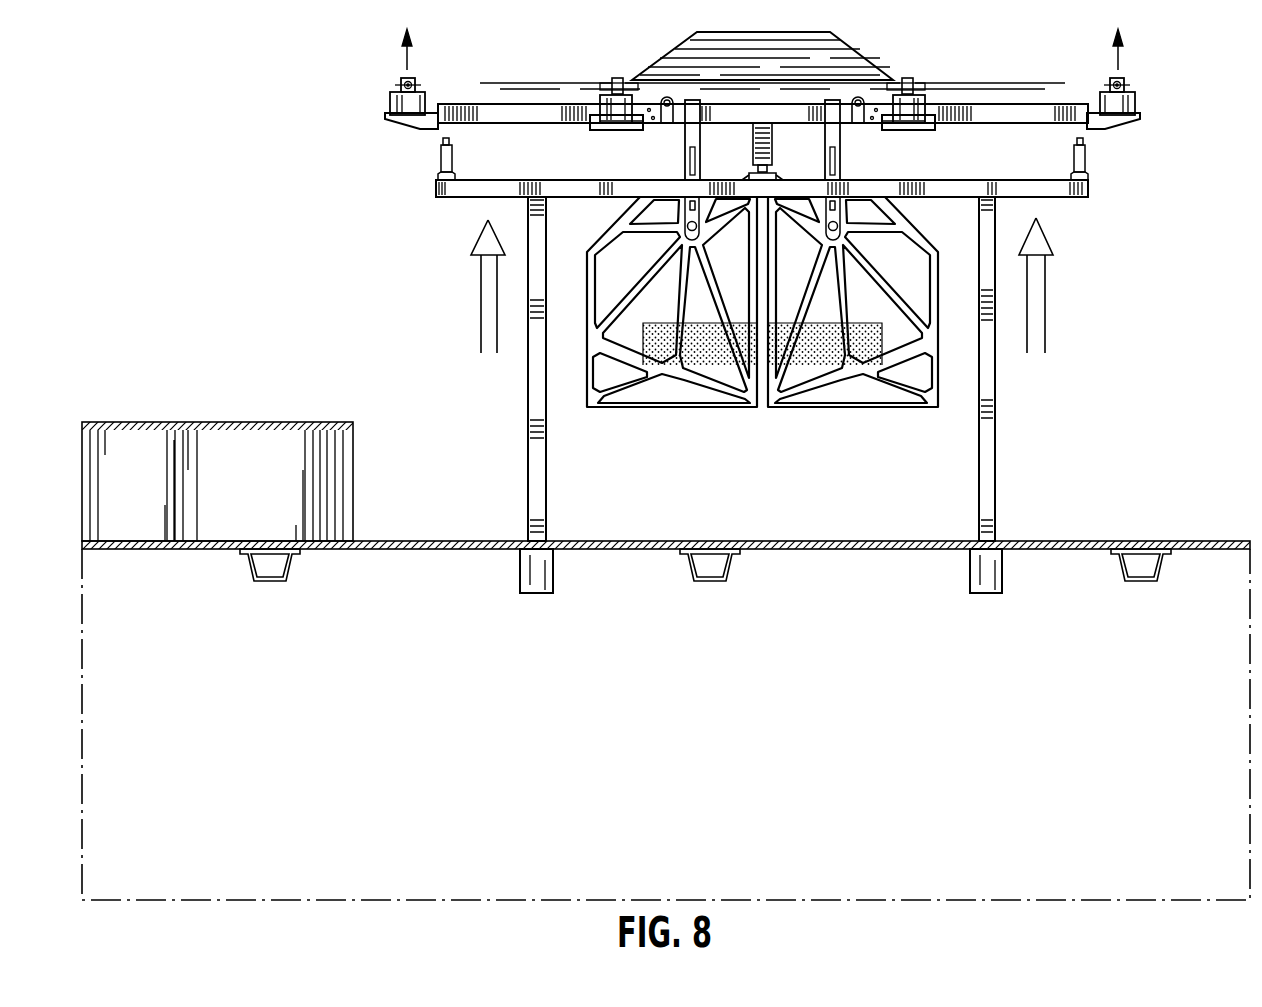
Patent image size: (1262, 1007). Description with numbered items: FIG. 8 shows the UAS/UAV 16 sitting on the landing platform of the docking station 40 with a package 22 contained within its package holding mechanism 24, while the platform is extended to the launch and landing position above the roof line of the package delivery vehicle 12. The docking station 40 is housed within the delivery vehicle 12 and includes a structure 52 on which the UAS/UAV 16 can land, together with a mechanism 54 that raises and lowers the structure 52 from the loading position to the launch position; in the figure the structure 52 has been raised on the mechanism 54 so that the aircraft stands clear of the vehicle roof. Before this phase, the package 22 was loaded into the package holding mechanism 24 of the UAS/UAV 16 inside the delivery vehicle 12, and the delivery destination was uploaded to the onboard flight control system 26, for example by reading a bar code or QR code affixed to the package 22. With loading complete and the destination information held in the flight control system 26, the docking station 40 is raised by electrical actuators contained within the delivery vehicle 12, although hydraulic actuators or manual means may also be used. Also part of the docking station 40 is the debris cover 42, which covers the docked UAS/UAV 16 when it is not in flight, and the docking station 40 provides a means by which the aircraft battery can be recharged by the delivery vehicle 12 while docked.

The delivery vehicle 12 is at (1238, 539).
The UAS/UAV 16 is at (383, 123).
The package 22 is at (882, 342).
The package holding mechanism 24 is at (891, 398).
The onboard flight control system 26 is at (672, 56).
The docking station 40 is at (509, 396).
The debris cover 42 is at (300, 421).
The structure 52 is at (460, 200).
The mechanism 54 is at (526, 458).